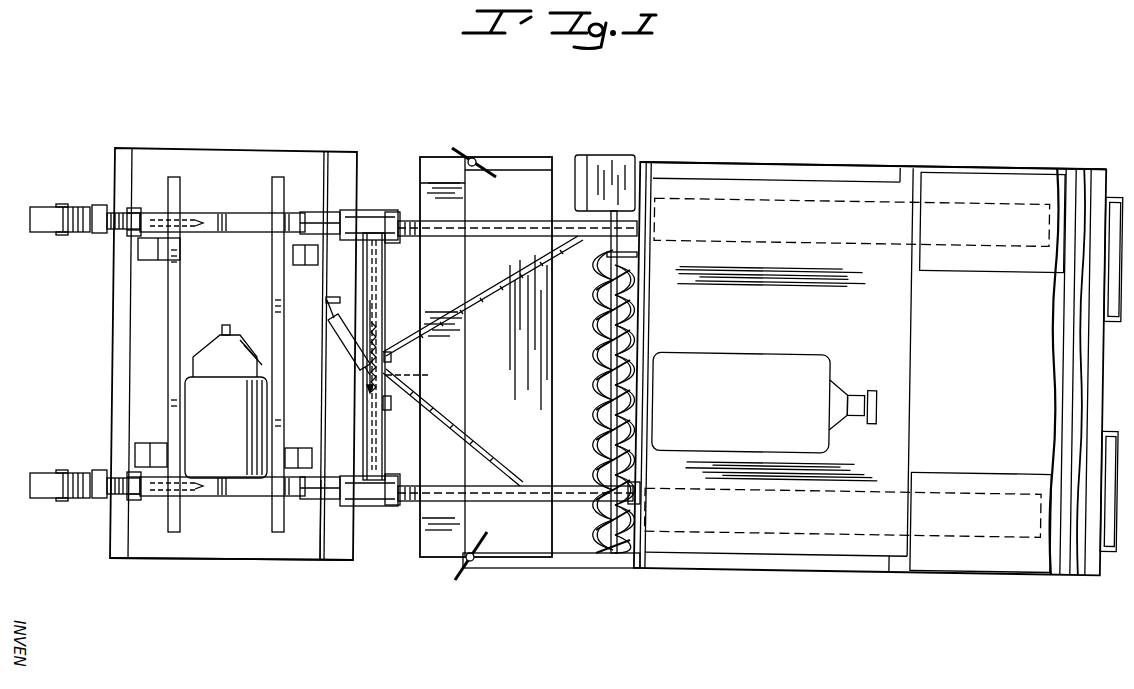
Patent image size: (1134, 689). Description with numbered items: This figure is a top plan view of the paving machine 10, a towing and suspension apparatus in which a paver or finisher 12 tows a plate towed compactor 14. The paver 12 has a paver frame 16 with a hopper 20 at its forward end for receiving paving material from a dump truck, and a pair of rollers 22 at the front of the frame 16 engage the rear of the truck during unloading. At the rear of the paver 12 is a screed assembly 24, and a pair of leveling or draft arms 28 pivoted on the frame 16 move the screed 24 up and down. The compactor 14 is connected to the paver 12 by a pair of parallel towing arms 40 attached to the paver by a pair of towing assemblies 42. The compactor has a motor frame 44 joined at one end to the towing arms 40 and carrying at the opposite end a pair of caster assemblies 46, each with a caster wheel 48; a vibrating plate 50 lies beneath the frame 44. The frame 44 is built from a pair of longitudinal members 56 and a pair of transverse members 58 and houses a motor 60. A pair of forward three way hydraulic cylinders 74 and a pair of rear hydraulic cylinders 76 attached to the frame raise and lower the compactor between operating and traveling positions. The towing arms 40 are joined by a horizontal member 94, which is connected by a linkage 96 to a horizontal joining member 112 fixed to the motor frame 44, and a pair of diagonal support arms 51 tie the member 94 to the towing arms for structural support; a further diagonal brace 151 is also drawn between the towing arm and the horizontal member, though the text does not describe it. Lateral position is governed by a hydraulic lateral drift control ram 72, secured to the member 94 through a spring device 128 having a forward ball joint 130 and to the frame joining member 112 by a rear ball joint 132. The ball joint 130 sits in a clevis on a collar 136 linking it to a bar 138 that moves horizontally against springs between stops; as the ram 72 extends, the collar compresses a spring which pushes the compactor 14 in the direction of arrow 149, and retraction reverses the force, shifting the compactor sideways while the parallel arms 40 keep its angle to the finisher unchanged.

The paving machine 10 is at (567, 140).
The paver 12 is at (760, 150).
The towed compactor 14 is at (282, 148).
The paver frame 16 is at (873, 146).
The hopper 20 is at (1067, 366).
The rollers 22 is at (1110, 284).
The screed assembly 24 is at (440, 560).
The leveling or draft arms 28 is at (588, 560).
The towing arms 40 is at (520, 207).
The towing assemblies 42 is at (630, 500).
The motor frame 44 is at (248, 502).
The caster assemblies 46 is at (97, 500).
The caster wheel 48 is at (40, 490).
The vibrating screed or plate 50 is at (226, 560).
The diagonal support arms 51 is at (450, 425).
The longitudinal members 56 is at (214, 215).
The transverse members 58 is at (282, 336).
The motor 60 is at (233, 342).
The hydraulic lateral drift control actuator or ram 72 is at (352, 343).
The forward three way hydraulic cylinders 74 is at (341, 223).
The rear hydraulic actuator cylinders 76 is at (143, 210).
The horizontal member 94 is at (365, 423).
The linkage 96 is at (386, 226).
The horizontal joining member 112 is at (335, 548).
The spring device 128 is at (392, 357).
The forward ball joint 130 is at (410, 377).
The rear ball joint 132 is at (326, 300).
The collar 136 is at (391, 403).
The bar 138 is at (383, 322).
The arrow 149 is at (374, 346).
The upper brace 151 is at (456, 310).